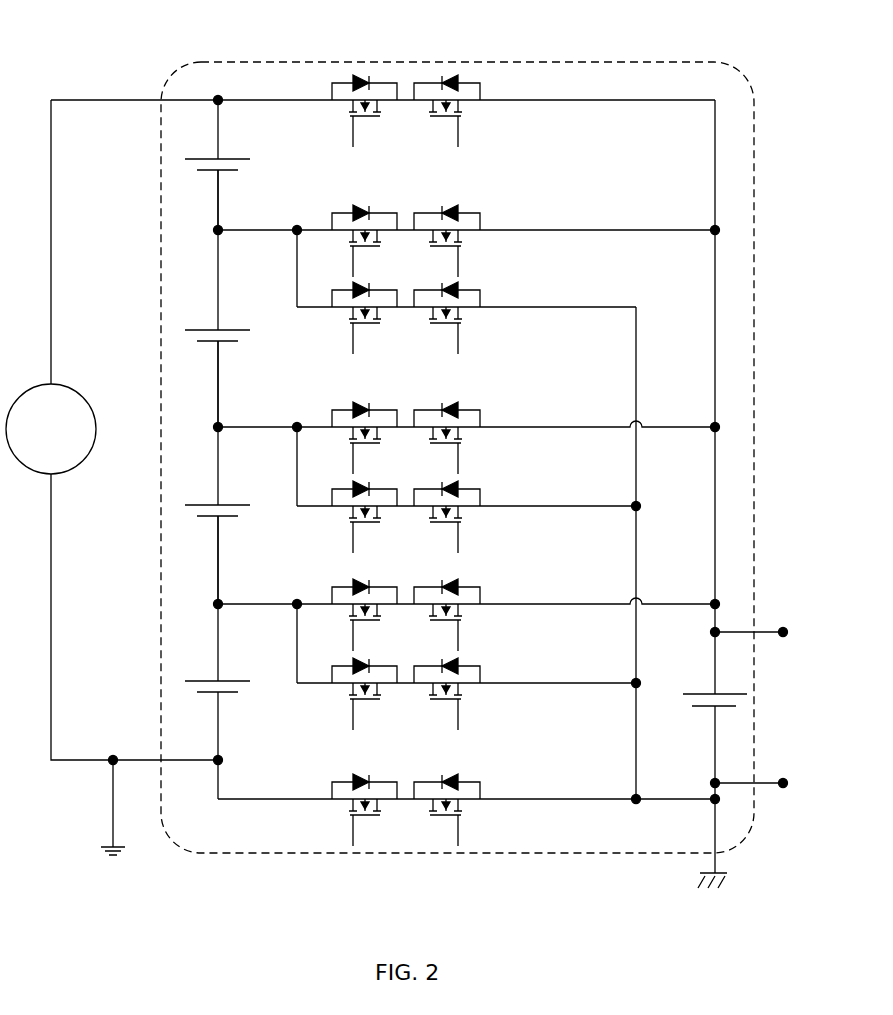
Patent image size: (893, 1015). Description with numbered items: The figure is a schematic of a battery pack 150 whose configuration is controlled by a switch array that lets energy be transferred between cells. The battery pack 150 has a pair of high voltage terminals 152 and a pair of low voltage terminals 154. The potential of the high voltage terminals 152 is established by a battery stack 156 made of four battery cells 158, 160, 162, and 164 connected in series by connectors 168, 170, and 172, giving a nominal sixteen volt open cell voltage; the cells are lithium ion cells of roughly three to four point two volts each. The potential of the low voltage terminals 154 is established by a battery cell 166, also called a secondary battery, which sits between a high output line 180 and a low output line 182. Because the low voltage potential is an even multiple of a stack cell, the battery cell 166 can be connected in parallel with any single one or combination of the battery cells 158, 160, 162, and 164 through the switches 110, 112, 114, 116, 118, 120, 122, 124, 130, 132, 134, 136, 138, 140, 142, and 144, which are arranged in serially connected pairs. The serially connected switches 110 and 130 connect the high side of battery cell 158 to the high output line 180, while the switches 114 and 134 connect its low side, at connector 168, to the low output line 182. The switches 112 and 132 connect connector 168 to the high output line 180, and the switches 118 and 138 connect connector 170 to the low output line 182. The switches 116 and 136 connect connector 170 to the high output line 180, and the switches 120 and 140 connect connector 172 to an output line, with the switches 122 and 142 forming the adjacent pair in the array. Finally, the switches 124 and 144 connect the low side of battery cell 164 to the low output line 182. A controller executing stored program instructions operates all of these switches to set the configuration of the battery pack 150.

The switch 110 is at (350, 79).
The switch 112 is at (345, 209).
The switch 114 is at (344, 318).
The switch 116 is at (349, 407).
The switch 118 is at (344, 523).
The switch 120 is at (348, 585).
The switch 122 is at (339, 700).
The switch 124 is at (345, 776).
The switch 130 is at (462, 79).
The switch 132 is at (462, 209).
The switch 134 is at (463, 318).
The switch 136 is at (463, 407).
The switch 138 is at (463, 523).
The switch 140 is at (463, 585).
The switch 142 is at (469, 700).
The switch 144 is at (467, 776).
The battery pack 150 is at (628, 62).
The high voltage terminals 152 is at (97, 88).
The low voltage terminals 154 is at (781, 616).
The battery stack 156 is at (188, 58).
The battery cell 158 is at (230, 159).
The battery cell 160 is at (230, 330).
The battery cell 162 is at (230, 505).
The battery cell 164 is at (234, 681).
The battery cell 166 is at (735, 694).
The connector 168 is at (218, 215).
The connector 170 is at (218, 392).
The connector 172 is at (218, 575).
The high output line 180 is at (715, 665).
The low output line 182 is at (715, 758).